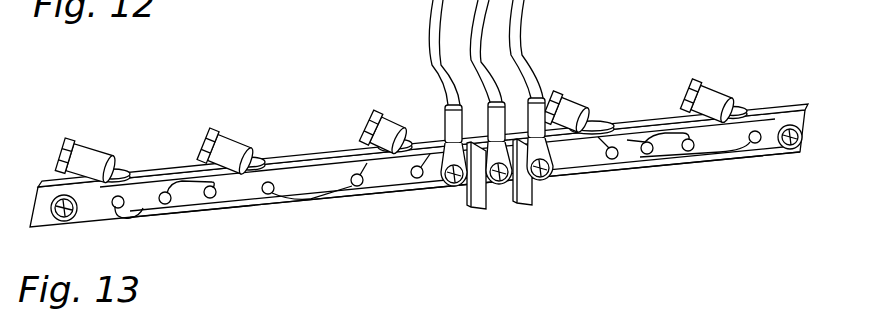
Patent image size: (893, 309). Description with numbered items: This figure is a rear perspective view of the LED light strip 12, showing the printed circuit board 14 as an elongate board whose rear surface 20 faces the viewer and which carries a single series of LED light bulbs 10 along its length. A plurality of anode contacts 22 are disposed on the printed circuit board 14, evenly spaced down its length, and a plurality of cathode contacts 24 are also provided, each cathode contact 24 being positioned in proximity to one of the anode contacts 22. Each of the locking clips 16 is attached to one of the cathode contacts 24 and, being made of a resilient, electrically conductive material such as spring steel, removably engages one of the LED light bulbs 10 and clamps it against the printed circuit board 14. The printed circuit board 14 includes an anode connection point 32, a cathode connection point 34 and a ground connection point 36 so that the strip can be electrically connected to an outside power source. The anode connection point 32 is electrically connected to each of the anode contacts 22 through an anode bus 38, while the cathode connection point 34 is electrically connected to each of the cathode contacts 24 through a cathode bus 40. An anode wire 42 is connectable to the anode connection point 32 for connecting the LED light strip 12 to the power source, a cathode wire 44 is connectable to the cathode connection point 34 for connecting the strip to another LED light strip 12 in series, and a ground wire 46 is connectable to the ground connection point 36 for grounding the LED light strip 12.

The LED light bulbs 10 is at (173, 136).
The LED light strip 12 is at (764, 60).
The printed circuit board 14 is at (632, 128).
The locking clips 16 is at (246, 158).
The rear surface 20 is at (419, 154).
The anode contacts 22 is at (618, 159).
The cathode contacts 24 is at (207, 198).
The anode connection point 32 is at (544, 186).
The cathode connection point 34 is at (462, 201).
The ground connection point 36 is at (507, 200).
The anode bus 38 is at (398, 193).
The cathode bus 40 is at (313, 158).
The anode wire 42 is at (549, 3).
The cathode wire 44 is at (428, 35).
The ground wire 46 is at (480, 72).